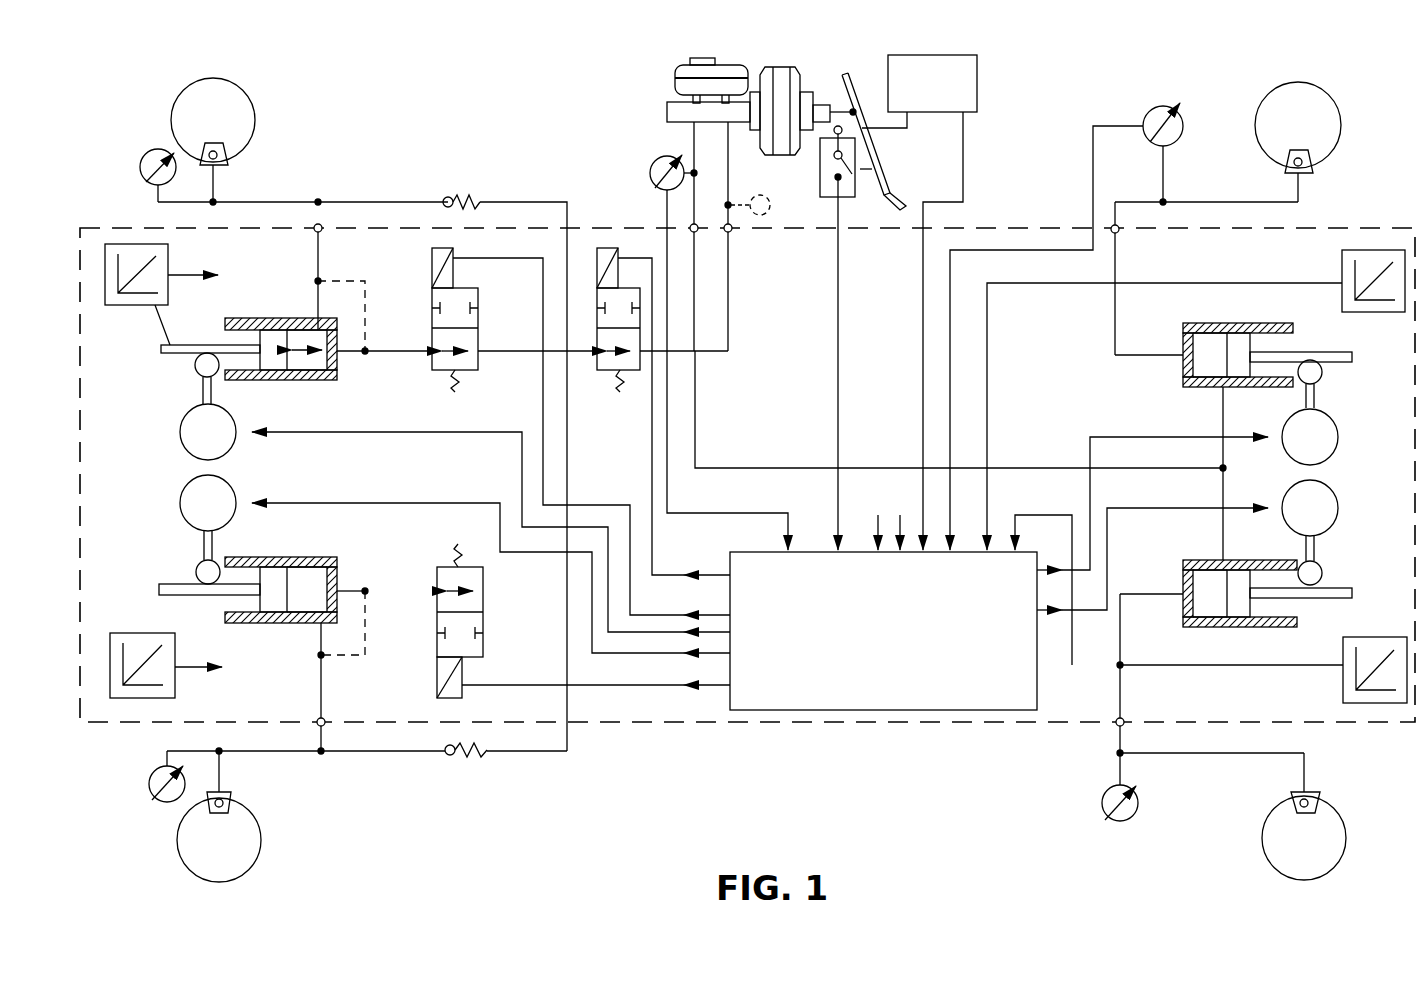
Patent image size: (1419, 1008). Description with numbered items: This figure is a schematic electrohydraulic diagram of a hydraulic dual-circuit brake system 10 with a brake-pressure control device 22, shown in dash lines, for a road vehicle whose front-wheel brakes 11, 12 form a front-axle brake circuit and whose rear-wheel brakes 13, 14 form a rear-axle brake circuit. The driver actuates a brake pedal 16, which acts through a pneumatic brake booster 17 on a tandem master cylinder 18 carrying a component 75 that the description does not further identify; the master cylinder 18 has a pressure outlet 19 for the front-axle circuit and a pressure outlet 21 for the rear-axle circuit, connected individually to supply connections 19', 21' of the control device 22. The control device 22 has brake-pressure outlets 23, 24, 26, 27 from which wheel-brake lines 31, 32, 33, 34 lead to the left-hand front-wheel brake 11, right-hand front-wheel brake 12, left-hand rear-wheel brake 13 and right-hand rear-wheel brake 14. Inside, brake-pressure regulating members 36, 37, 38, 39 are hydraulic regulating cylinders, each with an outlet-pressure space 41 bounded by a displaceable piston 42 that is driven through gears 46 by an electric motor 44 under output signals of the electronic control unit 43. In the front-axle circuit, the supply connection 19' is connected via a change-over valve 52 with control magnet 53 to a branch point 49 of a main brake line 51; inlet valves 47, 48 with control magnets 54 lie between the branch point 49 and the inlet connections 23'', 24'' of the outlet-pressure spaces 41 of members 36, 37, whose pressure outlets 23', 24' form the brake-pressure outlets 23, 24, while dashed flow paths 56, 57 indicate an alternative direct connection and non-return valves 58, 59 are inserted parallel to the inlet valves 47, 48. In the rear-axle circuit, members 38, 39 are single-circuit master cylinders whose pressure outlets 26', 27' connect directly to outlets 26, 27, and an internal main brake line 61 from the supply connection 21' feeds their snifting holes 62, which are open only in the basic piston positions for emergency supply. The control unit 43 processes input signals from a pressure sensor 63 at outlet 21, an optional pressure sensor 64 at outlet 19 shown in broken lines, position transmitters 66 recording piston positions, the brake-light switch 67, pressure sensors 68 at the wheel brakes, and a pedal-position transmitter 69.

The hydraulic dual-circuit brake system 10 is at (508, 113).
The left-hand front-wheel brake 11 is at (258, 840).
The right-hand front-wheel brake 12 is at (247, 112).
The left-hand rear-wheel brake 13 is at (1333, 832).
The right-hand rear-wheel brake 14 is at (1328, 142).
The brake pedal 16 is at (888, 192).
The brake booster 17 is at (783, 158).
The master cylinder 18 is at (664, 102).
The pressure outlet 19 is at (712, 173).
The supply connection 19' is at (760, 287).
The pressure outlet 21 is at (640, 168).
The supply connection 21' is at (713, 287).
The brake-pressure control device 22 is at (1003, 226).
The brake-pressure outlet 23 is at (339, 687).
The pressure outlet 23' is at (301, 652).
The inlet connection 23'' is at (363, 558).
The brake-pressure outlet 24 is at (339, 264).
The pressure outlet 24' is at (300, 289).
The inlet connection 24'' is at (374, 370).
The brake-pressure outlet 26 is at (1153, 673).
The pressure outlet 26' is at (1150, 620).
The brake-pressure outlet 27 is at (1142, 290).
The pressure outlet 27' is at (1149, 323).
The wheel-brake line 31 is at (284, 752).
The wheel-brake line 32 is at (285, 202).
The wheel-brake line 33 is at (1217, 754).
The wheel-brake line 34 is at (1228, 202).
The brake-pressure regulating member 36 is at (258, 626).
The brake-pressure regulating member 37 is at (252, 316).
The brake-pressure regulating member 38 is at (1218, 628).
The brake-pressure regulating member 39 is at (1210, 322).
The outlet-pressure space 41 is at (318, 372).
The piston 42 is at (272, 365).
The electronic control unit 43 is at (1042, 690).
The electric motor 44 is at (235, 452).
The gear 46 is at (193, 370).
The inlet valve 47 is at (436, 575).
The inlet valve 48 is at (437, 372).
The branch point 49 is at (543, 356).
The main brake line 51 is at (583, 356).
The change-over valve 52 is at (628, 372).
The control magnet 53 is at (608, 248).
The control magnet 54 is at (432, 260).
The flow path 56 is at (368, 636).
The flow path 57 is at (367, 298).
The non-return valve 58 is at (460, 755).
The non-return valve 59 is at (450, 200).
The internal main brake line 61 is at (697, 402).
The snifting hole 62 is at (1218, 388).
The pressure sensor 63 is at (650, 173).
The pressure sensor 64 is at (752, 198).
The position transmitter 66 is at (168, 252).
The brake-light switch 67 is at (848, 195).
The pressure sensor 68 is at (141, 167).
The pedal-position transmitter 69 is at (977, 76).
The fluid reservoir 75 is at (673, 82).